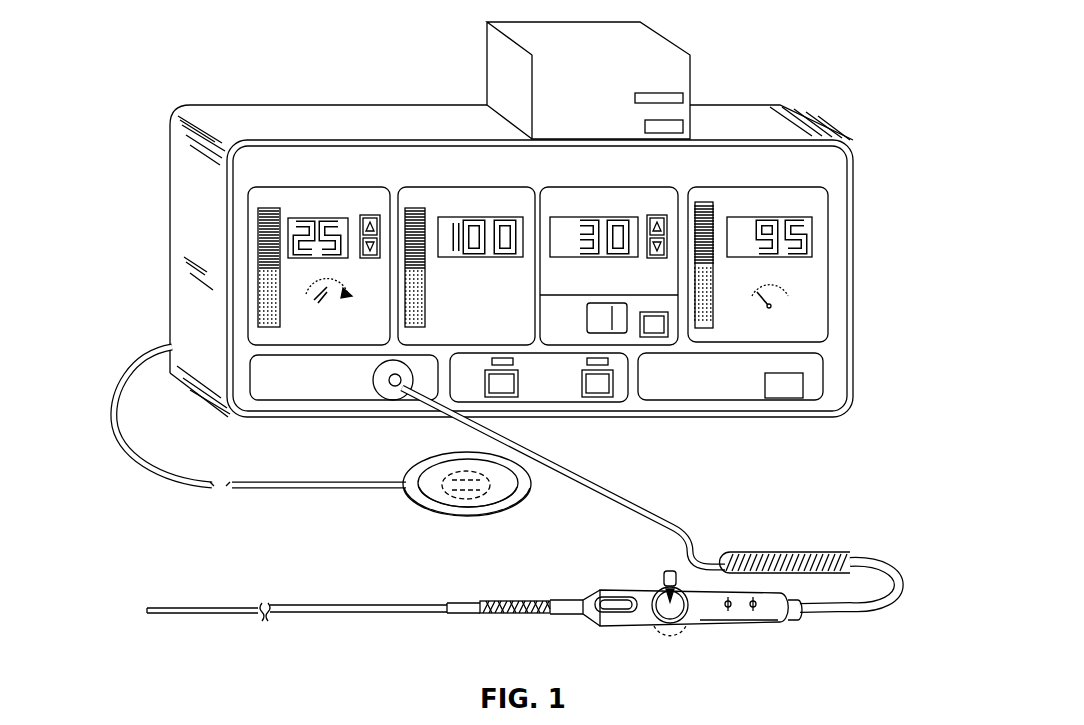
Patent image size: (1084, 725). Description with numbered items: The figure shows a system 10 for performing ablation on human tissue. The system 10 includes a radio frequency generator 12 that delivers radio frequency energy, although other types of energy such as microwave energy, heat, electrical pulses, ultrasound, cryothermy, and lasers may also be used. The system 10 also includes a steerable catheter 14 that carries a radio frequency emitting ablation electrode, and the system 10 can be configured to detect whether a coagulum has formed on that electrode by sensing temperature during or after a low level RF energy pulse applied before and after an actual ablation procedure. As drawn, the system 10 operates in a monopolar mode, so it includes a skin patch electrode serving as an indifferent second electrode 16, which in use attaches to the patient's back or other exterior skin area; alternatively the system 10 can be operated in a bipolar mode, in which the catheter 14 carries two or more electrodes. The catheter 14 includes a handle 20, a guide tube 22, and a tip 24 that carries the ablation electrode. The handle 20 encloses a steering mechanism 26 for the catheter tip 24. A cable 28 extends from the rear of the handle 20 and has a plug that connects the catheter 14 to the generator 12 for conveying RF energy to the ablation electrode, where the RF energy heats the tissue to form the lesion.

The system 10 is at (160, 290).
The radio frequency generator 12 is at (738, 119).
The steerable catheter 14 is at (601, 581).
The indifferent second electrode 16 is at (457, 512).
The handle 20 is at (709, 612).
The guide tube 22 is at (377, 613).
The tip 24 is at (147, 607).
The steering mechanism 26 is at (648, 623).
The cable 28 is at (606, 490).